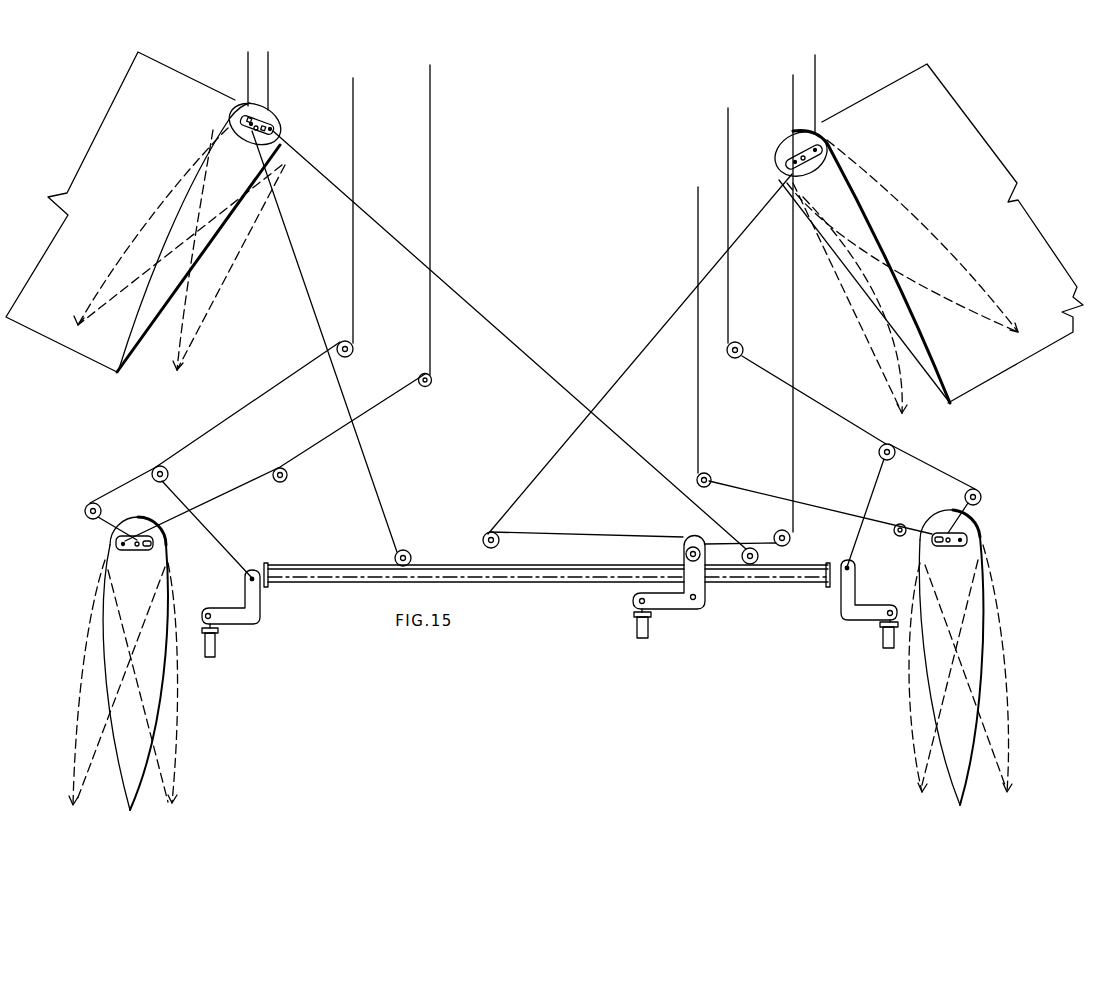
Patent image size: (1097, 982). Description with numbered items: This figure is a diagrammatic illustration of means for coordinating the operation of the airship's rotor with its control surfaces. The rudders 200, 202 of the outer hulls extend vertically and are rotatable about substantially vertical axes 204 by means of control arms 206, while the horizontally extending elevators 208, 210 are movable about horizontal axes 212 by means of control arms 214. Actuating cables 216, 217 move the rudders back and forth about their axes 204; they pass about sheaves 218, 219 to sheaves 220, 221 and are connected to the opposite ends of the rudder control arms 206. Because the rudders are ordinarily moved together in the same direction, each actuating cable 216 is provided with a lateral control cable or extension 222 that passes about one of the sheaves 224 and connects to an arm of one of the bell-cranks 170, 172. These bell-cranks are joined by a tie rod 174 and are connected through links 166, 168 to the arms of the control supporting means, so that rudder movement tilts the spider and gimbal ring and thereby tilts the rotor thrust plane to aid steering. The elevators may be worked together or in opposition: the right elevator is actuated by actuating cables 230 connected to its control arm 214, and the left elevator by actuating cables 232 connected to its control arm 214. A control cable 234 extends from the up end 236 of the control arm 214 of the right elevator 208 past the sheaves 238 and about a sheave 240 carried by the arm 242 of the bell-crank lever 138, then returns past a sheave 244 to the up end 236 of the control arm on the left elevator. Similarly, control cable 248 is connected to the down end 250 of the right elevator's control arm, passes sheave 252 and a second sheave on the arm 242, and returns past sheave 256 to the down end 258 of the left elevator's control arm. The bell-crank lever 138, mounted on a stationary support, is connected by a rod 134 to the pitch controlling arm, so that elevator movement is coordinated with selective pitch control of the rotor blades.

The rod 134 is at (637, 630).
The bell-crank lever 138 is at (670, 603).
The link 166 is at (887, 642).
The link 168 is at (216, 643).
The bell-crank 170 is at (838, 594).
The bell-crank 172 is at (253, 600).
The tie rod 174 is at (548, 578).
The rudder 200 is at (975, 660).
The rudder 202 is at (147, 702).
The vertical axes 204 is at (140, 541).
The control arms 206 is at (154, 546).
The right elevator 208 is at (982, 382).
The left elevator 210 is at (92, 352).
The horizontal axes 212 is at (268, 126).
The control arms 214 is at (252, 138).
The actuating cable 216 is at (355, 135).
The actuating cable 217 is at (430, 163).
The sheave 218 is at (354, 350).
The sheave 219 is at (436, 377).
The sheave 220 is at (86, 503).
The sheave 221 is at (290, 478).
The lateral control cable 222 is at (224, 553).
The sheave 224 is at (170, 473).
The actuating cables 230 is at (832, 93).
The actuating cables 232 is at (248, 74).
The control cable 234 is at (312, 303).
The up end 236 is at (244, 124).
The sheaves 238 is at (498, 537).
The sheave 240 is at (671, 538).
The arm 242 is at (703, 543).
The sheave 244 is at (413, 551).
The control cable 248 is at (500, 325).
The down end 250 is at (786, 166).
The sheave 252 is at (791, 537).
The sheave 256 is at (760, 556).
The down end 258 is at (277, 131).